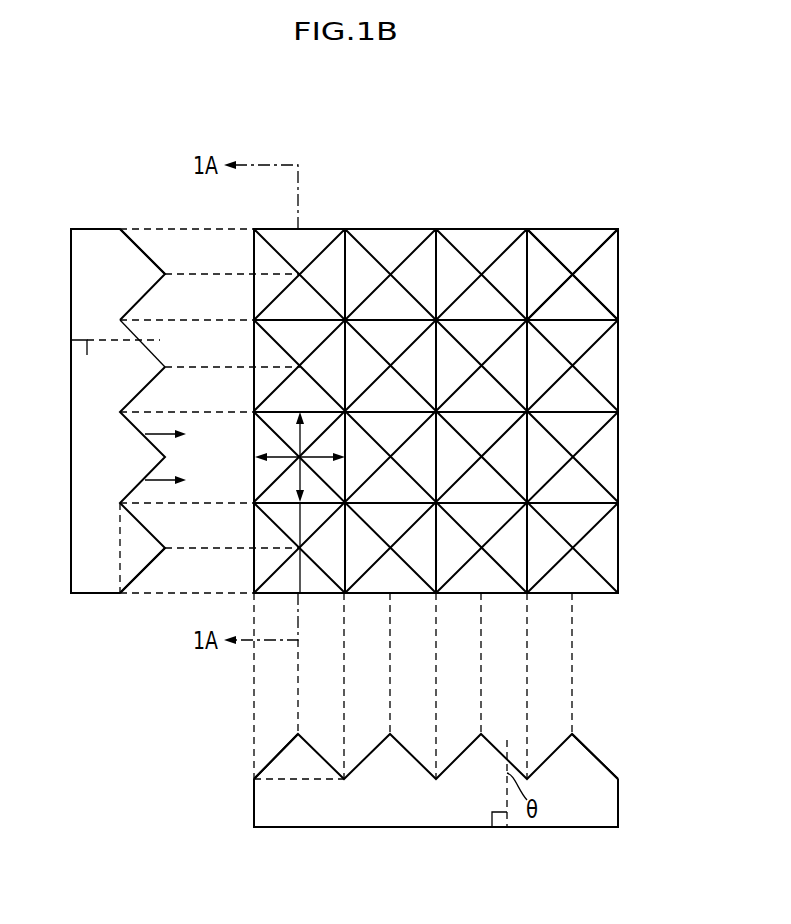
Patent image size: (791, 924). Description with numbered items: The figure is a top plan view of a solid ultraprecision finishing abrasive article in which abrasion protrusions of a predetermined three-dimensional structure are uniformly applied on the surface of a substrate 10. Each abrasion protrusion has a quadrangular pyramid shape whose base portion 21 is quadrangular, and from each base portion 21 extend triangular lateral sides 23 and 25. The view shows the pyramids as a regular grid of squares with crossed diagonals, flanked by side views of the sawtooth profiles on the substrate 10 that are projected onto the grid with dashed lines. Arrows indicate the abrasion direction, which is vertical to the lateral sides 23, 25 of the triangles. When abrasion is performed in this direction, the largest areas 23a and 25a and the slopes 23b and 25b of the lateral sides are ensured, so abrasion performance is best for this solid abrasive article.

The substrate 10 is at (71, 413).
The base portion 21 is at (118, 552).
The lateral side 23 is at (603, 368).
The largest area 23a is at (138, 256).
The slope 23b is at (145, 573).
The lateral side 25 is at (573, 242).
The largest area 25a is at (593, 763).
The slope 25b is at (280, 762).